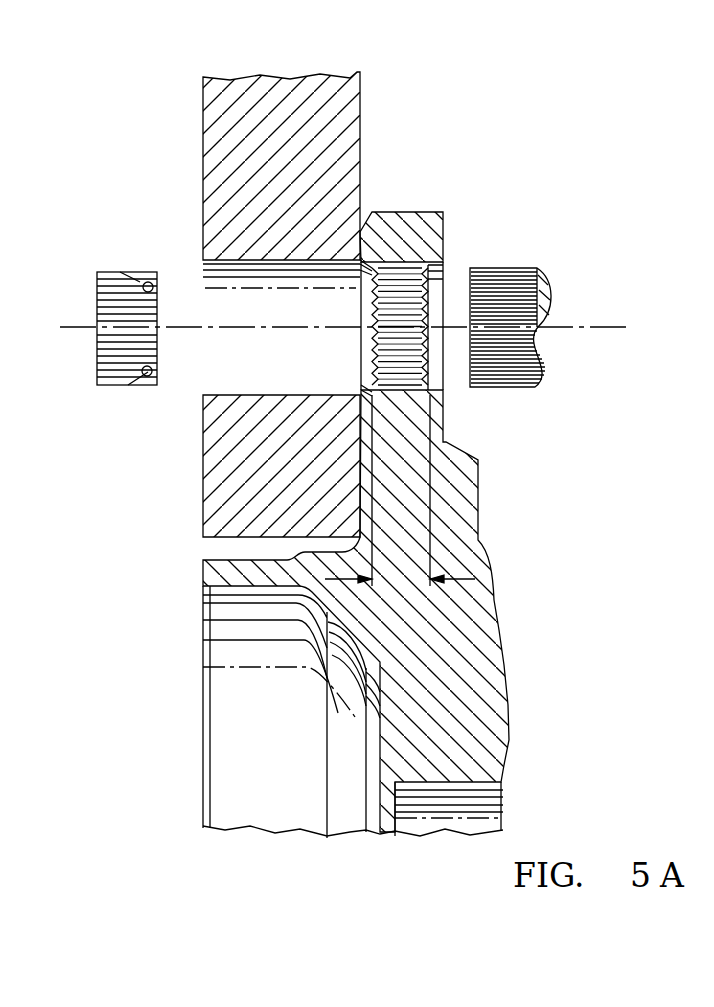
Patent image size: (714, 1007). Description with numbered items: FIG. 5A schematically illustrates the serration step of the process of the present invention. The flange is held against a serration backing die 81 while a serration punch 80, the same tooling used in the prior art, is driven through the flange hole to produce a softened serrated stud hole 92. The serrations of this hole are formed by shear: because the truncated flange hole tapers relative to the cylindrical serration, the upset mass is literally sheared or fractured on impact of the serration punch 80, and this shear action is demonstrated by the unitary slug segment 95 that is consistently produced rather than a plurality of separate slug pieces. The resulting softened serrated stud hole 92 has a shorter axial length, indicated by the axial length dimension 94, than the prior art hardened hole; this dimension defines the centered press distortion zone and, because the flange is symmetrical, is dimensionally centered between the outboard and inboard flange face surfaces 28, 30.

The serration backing die 81 is at (361, 117).
The outboard flange face surface 28 is at (361, 232).
The softened serrated stud hole 92 is at (423, 266).
The inboard flange face surface 30 is at (444, 252).
The serration punch 80 is at (511, 267).
The unitary slug segment 95 is at (134, 278).
The axial length dimension 94 is at (462, 579).